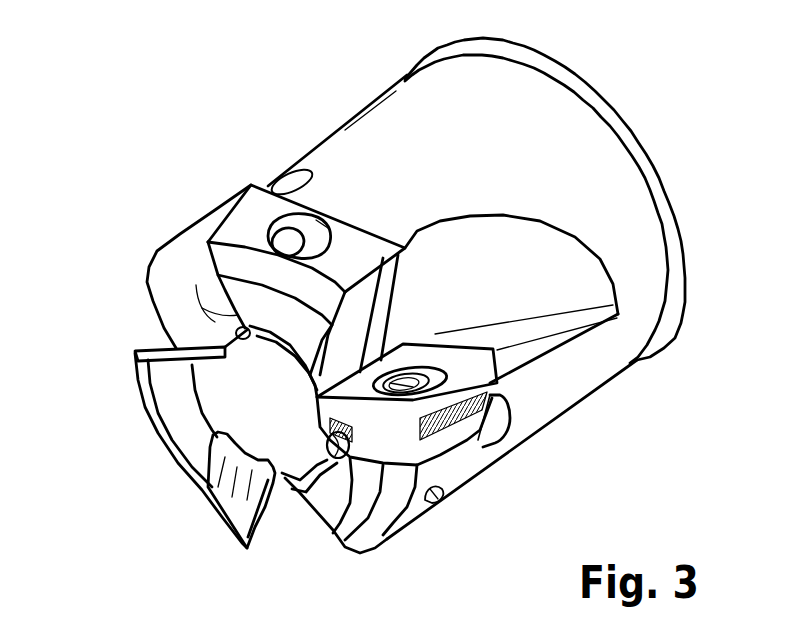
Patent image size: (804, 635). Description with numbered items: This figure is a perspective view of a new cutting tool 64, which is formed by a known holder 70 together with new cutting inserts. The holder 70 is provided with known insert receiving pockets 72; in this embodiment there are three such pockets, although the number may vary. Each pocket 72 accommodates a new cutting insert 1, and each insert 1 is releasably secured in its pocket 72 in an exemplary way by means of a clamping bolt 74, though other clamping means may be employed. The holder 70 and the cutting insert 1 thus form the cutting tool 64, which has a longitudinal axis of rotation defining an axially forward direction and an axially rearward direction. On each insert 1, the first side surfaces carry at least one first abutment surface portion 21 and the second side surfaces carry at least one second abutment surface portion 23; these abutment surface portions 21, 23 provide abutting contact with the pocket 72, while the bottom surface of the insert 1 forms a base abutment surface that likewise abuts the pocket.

The cutting tool 64 is at (166, 187).
The holder 70 is at (413, 140).
The clamping bolt 74 is at (495, 347).
The insert receiving pocket 72 is at (507, 420).
The cutting insert 1 is at (466, 430).
The first abutment surface portion 21 is at (453, 430).
The second abutment surface portion 23 is at (352, 520).